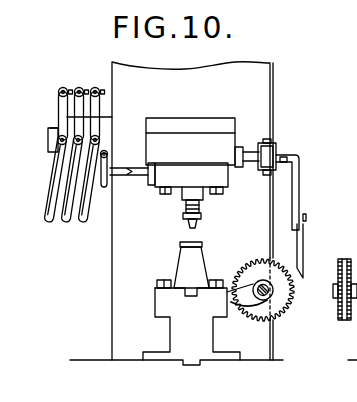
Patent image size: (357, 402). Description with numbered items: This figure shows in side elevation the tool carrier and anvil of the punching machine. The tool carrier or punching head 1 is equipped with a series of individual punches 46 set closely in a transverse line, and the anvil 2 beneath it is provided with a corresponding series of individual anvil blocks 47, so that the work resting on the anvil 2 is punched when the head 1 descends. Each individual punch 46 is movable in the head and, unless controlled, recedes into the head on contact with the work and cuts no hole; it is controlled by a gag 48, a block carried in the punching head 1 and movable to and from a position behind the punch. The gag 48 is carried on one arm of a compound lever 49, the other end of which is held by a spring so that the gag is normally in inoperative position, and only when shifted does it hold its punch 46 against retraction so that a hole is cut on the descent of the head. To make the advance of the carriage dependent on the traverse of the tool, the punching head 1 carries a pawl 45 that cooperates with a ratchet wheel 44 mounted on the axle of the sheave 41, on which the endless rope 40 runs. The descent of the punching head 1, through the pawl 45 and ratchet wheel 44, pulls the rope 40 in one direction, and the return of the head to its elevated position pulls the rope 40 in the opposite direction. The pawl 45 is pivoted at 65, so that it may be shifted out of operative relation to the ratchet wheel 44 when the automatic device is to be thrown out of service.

The tool carrier 1 is at (218, 143).
The anvil 2 is at (160, 289).
The endless rope 40 is at (348, 322).
The sheave 41 is at (342, 319).
The ratchet wheel 44 is at (271, 294).
The pawl 45 is at (299, 248).
The individual punch 46 is at (190, 226).
The anvil block 47 is at (178, 246).
The gag 48 is at (153, 180).
The compound lever 49 is at (58, 108).
The pivot 65 is at (273, 144).